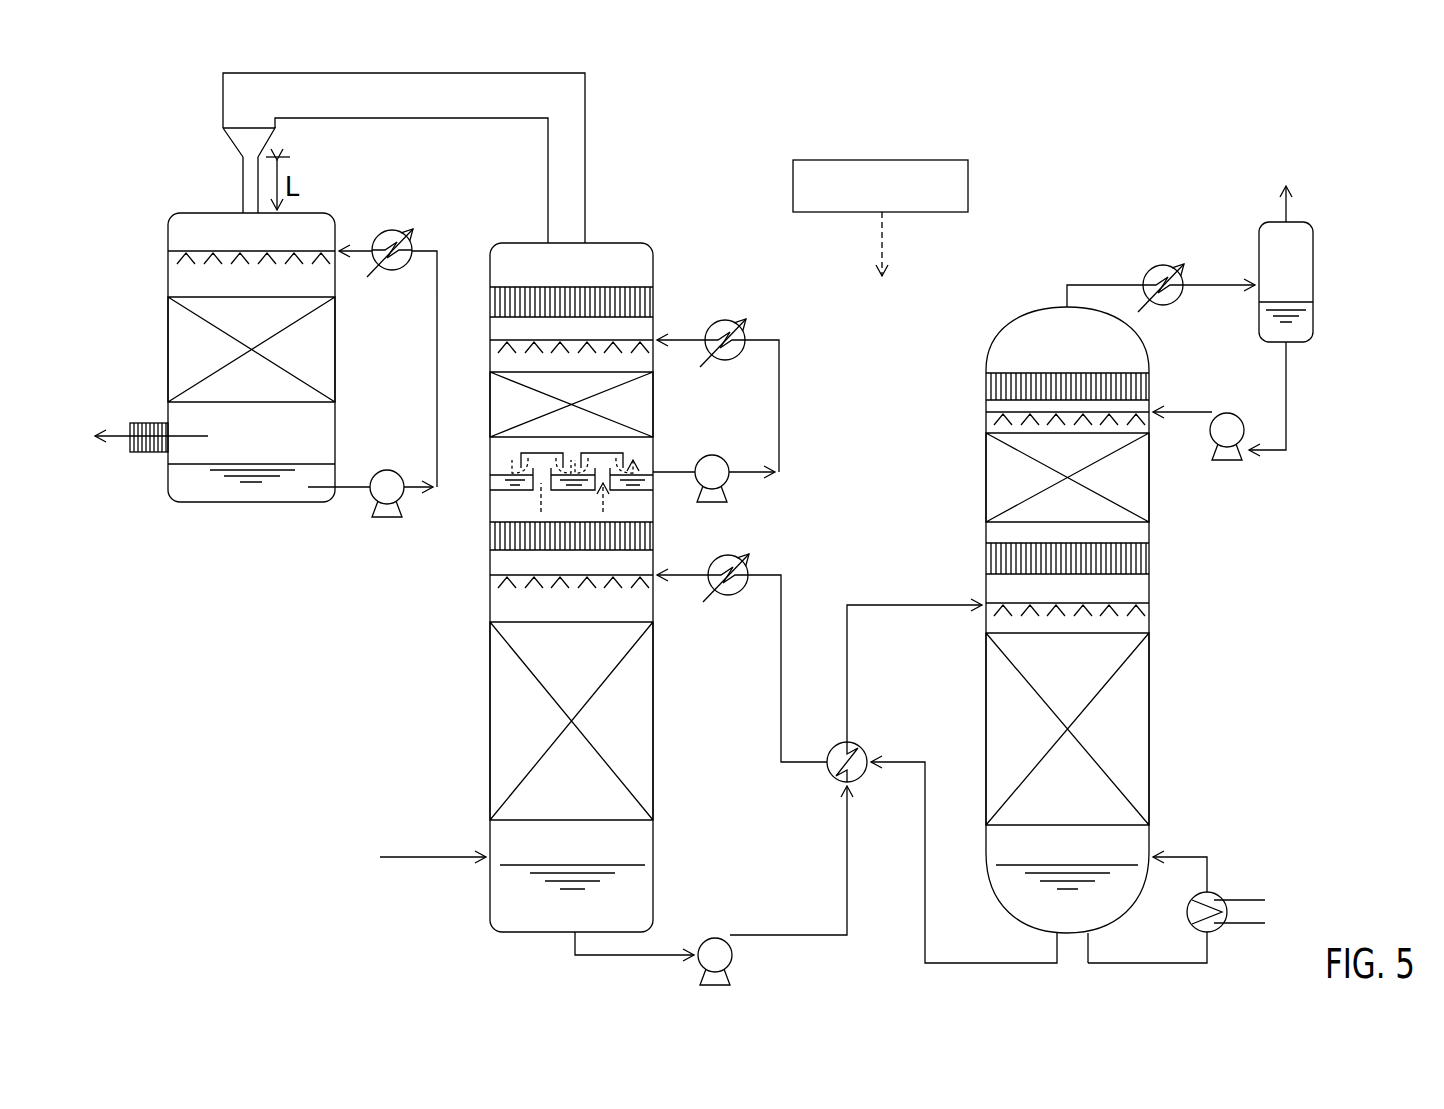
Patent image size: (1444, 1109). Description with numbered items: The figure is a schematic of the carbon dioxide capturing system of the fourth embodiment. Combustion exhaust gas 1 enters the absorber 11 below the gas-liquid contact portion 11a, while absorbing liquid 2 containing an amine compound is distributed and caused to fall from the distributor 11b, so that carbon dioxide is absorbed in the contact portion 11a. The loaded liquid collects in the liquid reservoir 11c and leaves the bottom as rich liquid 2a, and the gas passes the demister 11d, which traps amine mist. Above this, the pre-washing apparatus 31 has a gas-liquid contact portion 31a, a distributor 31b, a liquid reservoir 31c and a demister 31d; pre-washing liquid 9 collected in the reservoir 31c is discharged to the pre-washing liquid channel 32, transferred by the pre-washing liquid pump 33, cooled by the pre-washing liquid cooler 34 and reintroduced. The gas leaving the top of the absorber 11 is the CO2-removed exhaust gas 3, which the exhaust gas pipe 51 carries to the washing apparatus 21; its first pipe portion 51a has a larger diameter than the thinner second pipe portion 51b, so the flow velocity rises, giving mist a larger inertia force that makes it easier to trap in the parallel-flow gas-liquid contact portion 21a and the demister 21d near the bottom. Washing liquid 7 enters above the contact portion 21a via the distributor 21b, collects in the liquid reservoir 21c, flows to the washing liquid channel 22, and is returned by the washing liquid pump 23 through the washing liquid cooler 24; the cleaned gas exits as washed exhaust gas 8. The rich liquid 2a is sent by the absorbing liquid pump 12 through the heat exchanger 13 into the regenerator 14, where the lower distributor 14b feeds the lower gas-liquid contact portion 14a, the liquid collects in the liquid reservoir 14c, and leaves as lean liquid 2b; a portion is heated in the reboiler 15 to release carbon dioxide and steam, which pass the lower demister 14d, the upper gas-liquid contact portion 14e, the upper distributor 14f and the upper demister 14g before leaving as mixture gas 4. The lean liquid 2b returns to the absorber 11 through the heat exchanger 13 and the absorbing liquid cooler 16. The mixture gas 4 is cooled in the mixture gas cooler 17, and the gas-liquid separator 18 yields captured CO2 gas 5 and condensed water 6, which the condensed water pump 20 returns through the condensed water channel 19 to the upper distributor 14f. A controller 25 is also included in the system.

The combustion exhaust gas 1 is at (433, 852).
The absorbing liquid 2 is at (893, 825).
The rich liquid 2a is at (790, 935).
The lean liquid 2b is at (910, 762).
The CO2-removed exhaust gas 3 is at (585, 135).
The mixture gas 4 is at (1098, 283).
The captured CO2 gas 5 is at (1288, 210).
The condensed water 6 is at (1288, 410).
The washing liquid 7 is at (437, 268).
The washed exhaust gas 8 is at (118, 425).
The pre-washing liquid 9 is at (779, 372).
The absorber 11 is at (576, 556).
The gas-liquid contact portion 11a is at (490, 720).
The distributor 11b is at (488, 578).
The liquid reservoir 11c is at (508, 903).
The demister 11d is at (488, 536).
The absorbing liquid pump 12 is at (715, 945).
The heat exchanger 13 is at (831, 746).
The regenerator 14 is at (1064, 621).
The lower gas-liquid contact portion 14a is at (1150, 734).
The lower distributor 14b is at (1142, 610).
The liquid reservoir 14c is at (1016, 904).
The lower demister 14d is at (986, 562).
The upper gas-liquid contact portion 14e is at (986, 478).
The upper distributor 14f is at (986, 415).
The upper demister 14g is at (986, 385).
The reboiler 15 is at (1216, 892).
The absorbing liquid cooler 16 is at (728, 600).
The mixture gas cooler 17 is at (1163, 264).
The gas-liquid separator 18 is at (1313, 270).
The condensed water channel 19 is at (1263, 452).
The condensed water pump 20 is at (1228, 412).
The washing apparatus 21 is at (213, 401).
The gas-liquid contact portion 21a is at (168, 322).
The distributor 21b is at (186, 258).
The liquid reservoir 21c is at (262, 495).
The demister 21d is at (150, 455).
The washing liquid channel 22 is at (437, 353).
The washing liquid pump 23 is at (390, 468).
The washing liquid cooler 24 is at (388, 283).
The controller 25 is at (968, 180).
The pre-washing apparatus 31 is at (621, 360).
The gas-liquid contact portion 31a is at (642, 415).
The distributor 31b is at (645, 350).
The liquid reservoir 31c is at (655, 485).
The demister 31d is at (612, 282).
The pre-washing liquid channel 32 is at (779, 410).
The pre-washing liquid pump 33 is at (730, 480).
The pre-washing liquid cooler 34 is at (728, 312).
The exhaust gas pipe 51 is at (193, 153).
The first pipe portion 51a is at (282, 93).
The second pipe portion 51b is at (205, 185).